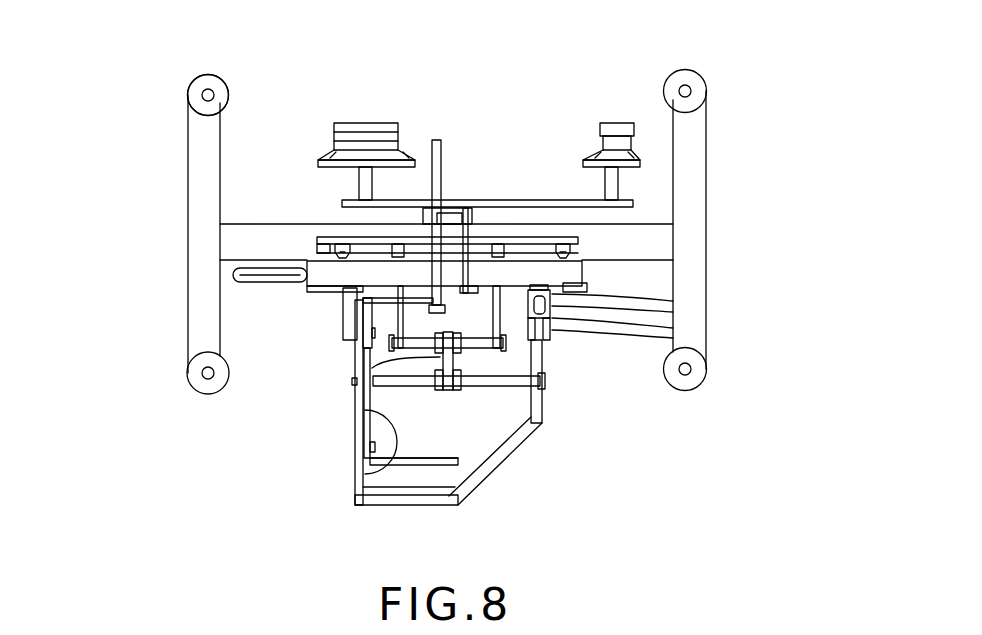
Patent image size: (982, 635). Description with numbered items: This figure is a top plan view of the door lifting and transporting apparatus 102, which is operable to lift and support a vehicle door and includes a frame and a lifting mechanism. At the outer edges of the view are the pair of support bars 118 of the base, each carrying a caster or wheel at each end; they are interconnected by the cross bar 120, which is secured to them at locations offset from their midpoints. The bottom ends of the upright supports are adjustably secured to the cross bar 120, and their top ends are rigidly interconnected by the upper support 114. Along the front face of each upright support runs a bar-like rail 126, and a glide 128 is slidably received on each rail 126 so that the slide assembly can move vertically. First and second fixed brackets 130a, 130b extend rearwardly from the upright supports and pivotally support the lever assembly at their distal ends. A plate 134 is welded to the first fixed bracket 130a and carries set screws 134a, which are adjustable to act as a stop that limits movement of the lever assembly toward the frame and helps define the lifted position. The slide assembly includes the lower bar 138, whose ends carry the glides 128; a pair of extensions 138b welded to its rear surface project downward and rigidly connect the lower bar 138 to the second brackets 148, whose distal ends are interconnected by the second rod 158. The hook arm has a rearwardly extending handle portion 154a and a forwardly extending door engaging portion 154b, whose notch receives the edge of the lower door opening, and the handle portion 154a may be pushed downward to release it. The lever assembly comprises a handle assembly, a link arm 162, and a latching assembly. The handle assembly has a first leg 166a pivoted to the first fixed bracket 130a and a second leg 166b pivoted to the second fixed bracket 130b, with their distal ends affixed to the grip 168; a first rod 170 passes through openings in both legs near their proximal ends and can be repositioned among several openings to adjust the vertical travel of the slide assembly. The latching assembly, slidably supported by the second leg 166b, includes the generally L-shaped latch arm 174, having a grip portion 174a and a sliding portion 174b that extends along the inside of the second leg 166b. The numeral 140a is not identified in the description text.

The door lifting and transporting apparatus 102 is at (198, 61).
The upper support 114 is at (567, 276).
The support bars 118 is at (188, 199).
The cross bar 120 is at (250, 226).
The rail 126 is at (594, 245).
The glide 128 is at (446, 242).
The first fixed bracket 130a is at (550, 324).
The second fixed bracket 130b is at (343, 338).
The plate 134 is at (673, 302).
The set screws 134a is at (673, 328).
The lower bar 138 is at (557, 244).
The extensions 138b is at (393, 252).
The suction cup 140a is at (367, 123).
The second brackets 148 is at (513, 297).
The handle portion 154a is at (440, 300).
The door engaging portion 154b is at (436, 140).
The second rod 158 is at (480, 348).
The link arm 162 is at (355, 388).
The first leg 166a is at (540, 397).
The second leg 166b is at (355, 445).
The grip 168 is at (387, 505).
The first rod 170 is at (540, 430).
The latch arm 174 is at (407, 434).
The grip portion 174a is at (460, 462).
The sliding portion 174b is at (387, 466).